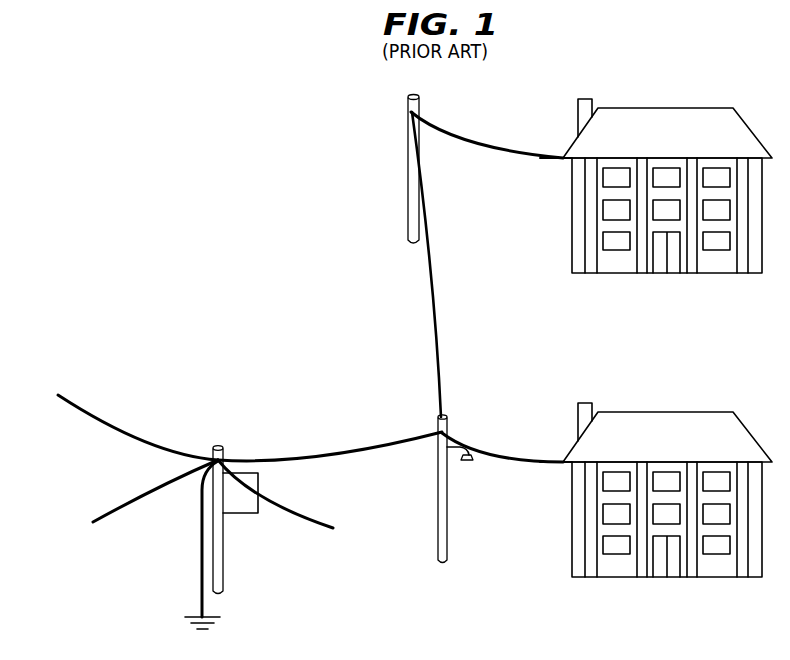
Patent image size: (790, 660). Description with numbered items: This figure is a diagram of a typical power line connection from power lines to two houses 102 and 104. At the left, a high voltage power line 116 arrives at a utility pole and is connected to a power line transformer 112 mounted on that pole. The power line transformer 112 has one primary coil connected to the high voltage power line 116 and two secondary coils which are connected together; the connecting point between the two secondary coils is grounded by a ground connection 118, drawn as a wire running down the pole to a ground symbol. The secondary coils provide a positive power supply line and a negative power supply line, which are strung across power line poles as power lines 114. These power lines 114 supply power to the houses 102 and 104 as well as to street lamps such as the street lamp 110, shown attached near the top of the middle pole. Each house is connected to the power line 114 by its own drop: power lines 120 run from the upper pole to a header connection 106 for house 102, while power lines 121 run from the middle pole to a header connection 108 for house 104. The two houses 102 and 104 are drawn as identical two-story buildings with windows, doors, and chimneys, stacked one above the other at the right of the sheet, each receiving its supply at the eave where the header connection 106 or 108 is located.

The house 102 is at (705, 108).
The house 104 is at (702, 412).
The header connection 106 is at (553, 156).
The header connection 108 is at (563, 460).
The street lamp 110 is at (472, 460).
The power line transformer 112 is at (248, 514).
The power lines 114 is at (367, 446).
The high voltage power line 116 is at (95, 421).
The ground connection 118 is at (200, 548).
The power lines 120 is at (472, 138).
The power lines 121 is at (493, 452).